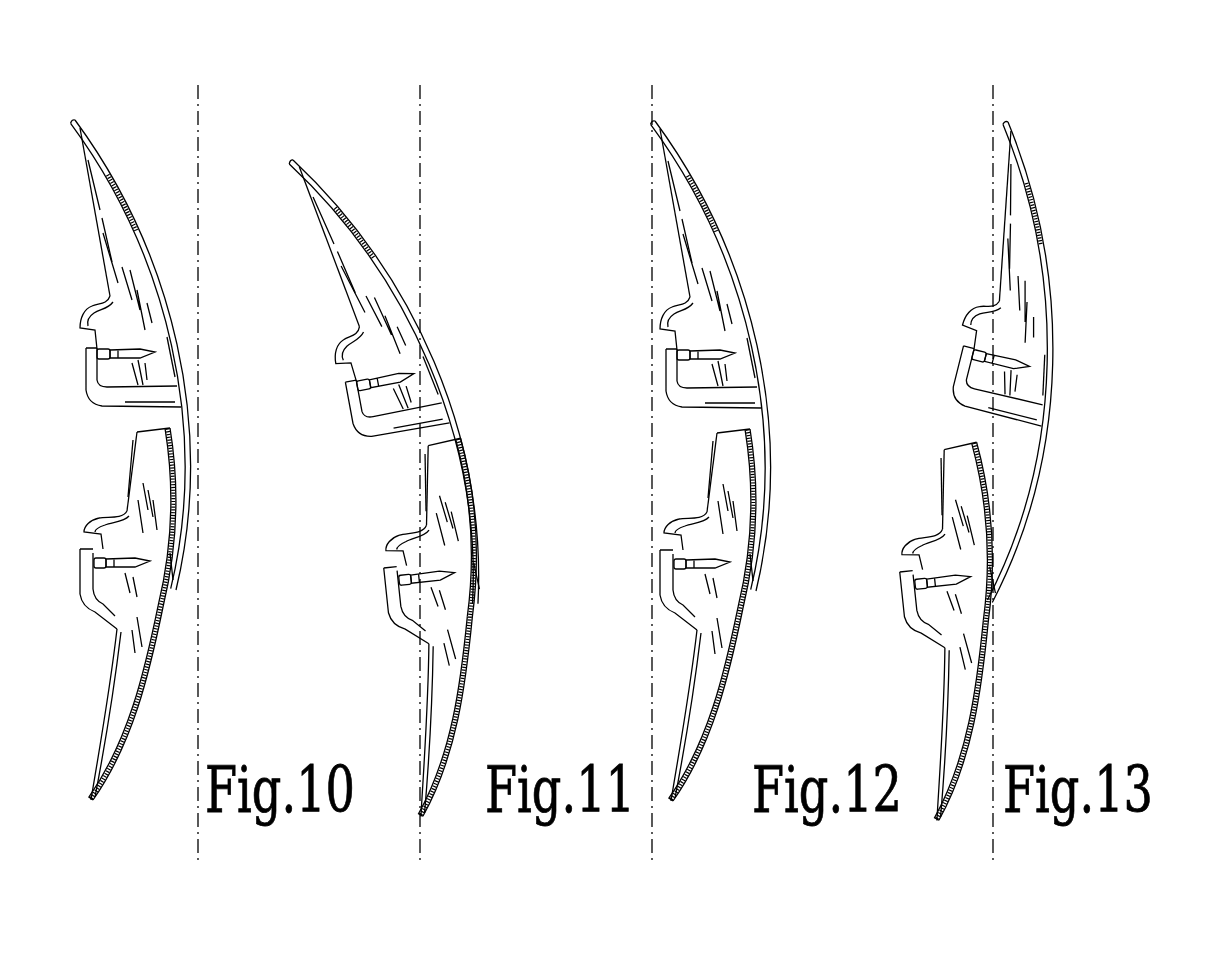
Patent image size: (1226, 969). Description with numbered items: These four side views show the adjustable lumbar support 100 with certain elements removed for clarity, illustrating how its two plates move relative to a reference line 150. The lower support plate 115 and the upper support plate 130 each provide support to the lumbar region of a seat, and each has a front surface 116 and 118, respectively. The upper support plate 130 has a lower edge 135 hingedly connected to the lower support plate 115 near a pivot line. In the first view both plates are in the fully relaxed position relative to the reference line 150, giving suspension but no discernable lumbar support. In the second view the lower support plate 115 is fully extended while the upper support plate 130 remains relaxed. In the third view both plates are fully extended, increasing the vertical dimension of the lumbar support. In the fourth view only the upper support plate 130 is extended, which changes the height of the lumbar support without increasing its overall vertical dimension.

In FIG. 10, the adjustable lumbar support 100 is at (52, 140).
In FIG. 11, the adjustable lumbar support 100 is at (290, 140).
In FIG. 12, the adjustable lumbar support 100 is at (633, 142).
In FIG. 13, the adjustable lumbar support 100 is at (930, 142).
In FIG. 10, the reference line 150 is at (198, 100).
In FIG. 11, the reference line 150 is at (420, 103).
In FIG. 12, the reference line 150 is at (652, 100).
In FIG. 13, the reference line 150 is at (993, 100).
In FIG. 10, the front surface 118 is at (175, 300).
In FIG. 11, the front surface 118 is at (425, 335).
In FIG. 12, the front surface 118 is at (750, 303).
In FIG. 13, the front surface 118 is at (1057, 315).
In FIG. 10, the upper support plate 130 is at (120, 238).
In FIG. 11, the upper support plate 130 is at (343, 240).
In FIG. 12, the upper support plate 130 is at (697, 232).
In FIG. 13, the upper support plate 130 is at (1022, 238).
In FIG. 10, the lower edge 135 is at (185, 546).
In FIG. 11, the lower edge 135 is at (481, 570).
In FIG. 12, the lower edge 135 is at (765, 540).
In FIG. 13, the lower edge 135 is at (1020, 554).
In FIG. 10, the lower support plate 115 is at (129, 680).
In FIG. 11, the lower support plate 115 is at (449, 702).
In FIG. 12, the lower support plate 115 is at (709, 680).
In FIG. 13, the lower support plate 115 is at (959, 718).
In FIG. 10, the front surface 116 is at (115, 765).
In FIG. 11, the front surface 116 is at (446, 765).
In FIG. 12, the front surface 116 is at (695, 765).
In FIG. 13, the front surface 116 is at (957, 779).